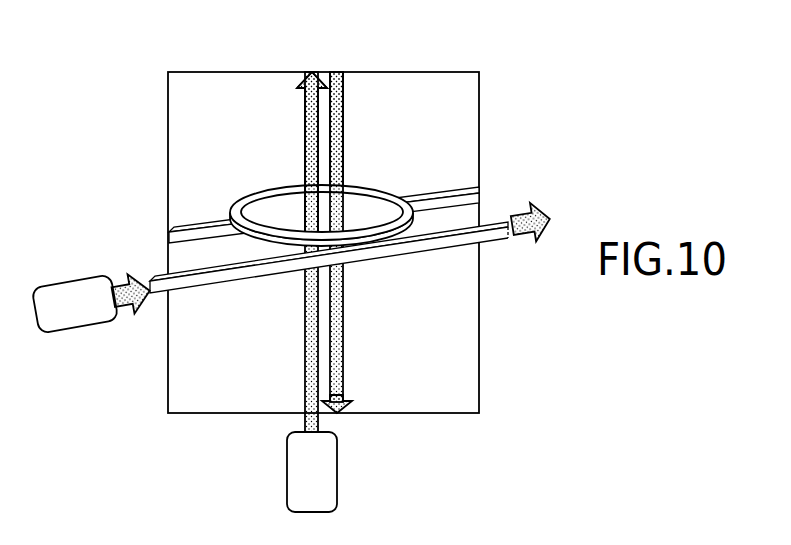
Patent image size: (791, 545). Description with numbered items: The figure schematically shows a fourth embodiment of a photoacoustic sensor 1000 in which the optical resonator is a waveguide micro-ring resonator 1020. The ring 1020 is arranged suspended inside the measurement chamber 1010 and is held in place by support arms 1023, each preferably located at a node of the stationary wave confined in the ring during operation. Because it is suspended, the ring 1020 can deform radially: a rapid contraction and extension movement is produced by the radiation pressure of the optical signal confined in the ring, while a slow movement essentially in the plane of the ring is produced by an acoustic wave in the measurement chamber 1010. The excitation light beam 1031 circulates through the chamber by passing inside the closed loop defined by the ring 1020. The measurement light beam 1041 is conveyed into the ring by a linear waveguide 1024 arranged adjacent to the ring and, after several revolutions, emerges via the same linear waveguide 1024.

The photoacoustic sensor 1000 is at (472, 54).
The measurement chamber 1010 is at (183, 72).
The micro-ring resonator 1020 is at (271, 188).
The support arms 1023 is at (199, 232).
The linear waveguide 1024 is at (233, 284).
The excitation light beam 1031 is at (340, 328).
The measurement light beam 1041 is at (133, 313).